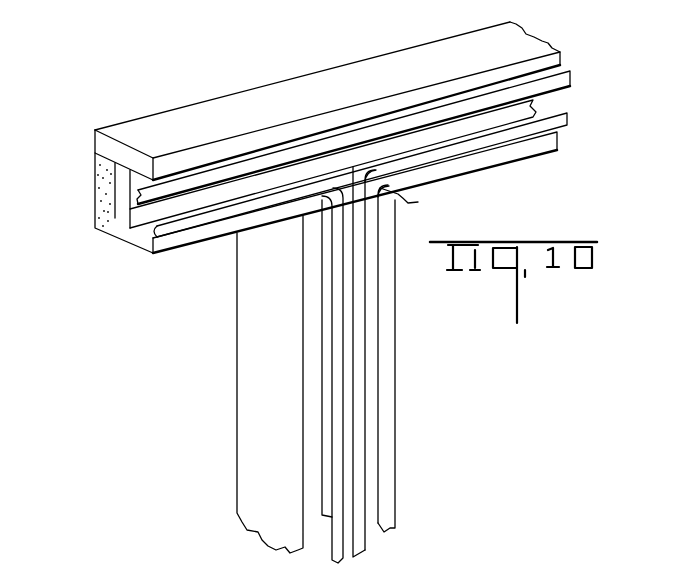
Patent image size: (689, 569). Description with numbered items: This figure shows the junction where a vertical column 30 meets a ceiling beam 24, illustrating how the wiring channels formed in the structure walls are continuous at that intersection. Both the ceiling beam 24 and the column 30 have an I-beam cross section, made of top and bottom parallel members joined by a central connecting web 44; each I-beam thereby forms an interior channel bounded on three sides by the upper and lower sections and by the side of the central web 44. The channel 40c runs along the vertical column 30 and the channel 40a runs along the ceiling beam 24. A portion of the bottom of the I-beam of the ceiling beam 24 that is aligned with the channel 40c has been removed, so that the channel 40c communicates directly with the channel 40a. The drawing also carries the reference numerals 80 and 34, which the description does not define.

The ceiling beam 24 is at (339, 72).
The column 30 is at (260, 406).
The channel 40a is at (145, 236).
The channel 40c is at (376, 472).
The central connecting web 44 is at (120, 200).
The joint 80 is at (380, 186).
The panel 34 is at (418, 563).